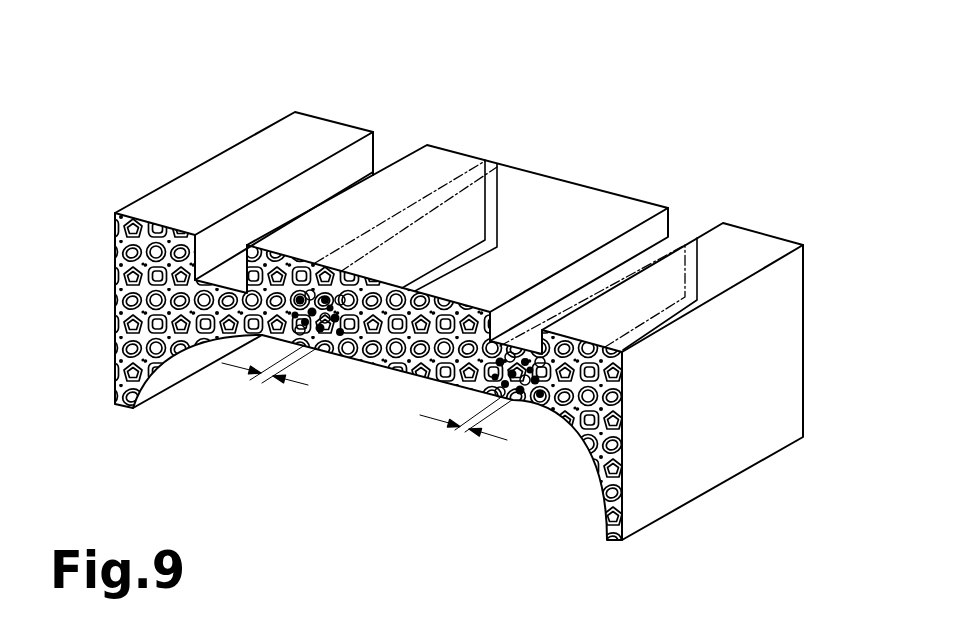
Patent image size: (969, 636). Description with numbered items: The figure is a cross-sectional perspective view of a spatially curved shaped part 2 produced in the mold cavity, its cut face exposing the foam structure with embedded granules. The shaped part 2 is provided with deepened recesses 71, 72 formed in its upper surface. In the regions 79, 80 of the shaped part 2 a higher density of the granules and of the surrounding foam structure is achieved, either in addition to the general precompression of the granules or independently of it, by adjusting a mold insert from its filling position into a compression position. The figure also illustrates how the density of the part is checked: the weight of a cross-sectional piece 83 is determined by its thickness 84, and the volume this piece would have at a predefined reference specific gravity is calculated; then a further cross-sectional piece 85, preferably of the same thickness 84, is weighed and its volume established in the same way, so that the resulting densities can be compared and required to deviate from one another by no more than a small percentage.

The shaped part 2 is at (677, 135).
The deepened recess 71 is at (405, 140).
The deepened recess 72 is at (699, 221).
The region of higher density 79 is at (233, 257).
The region of higher density 80 is at (657, 237).
The cross-sectional piece 83 is at (443, 241).
The thickness 84 is at (309, 383).
The further cross-sectional piece 85 is at (558, 372).